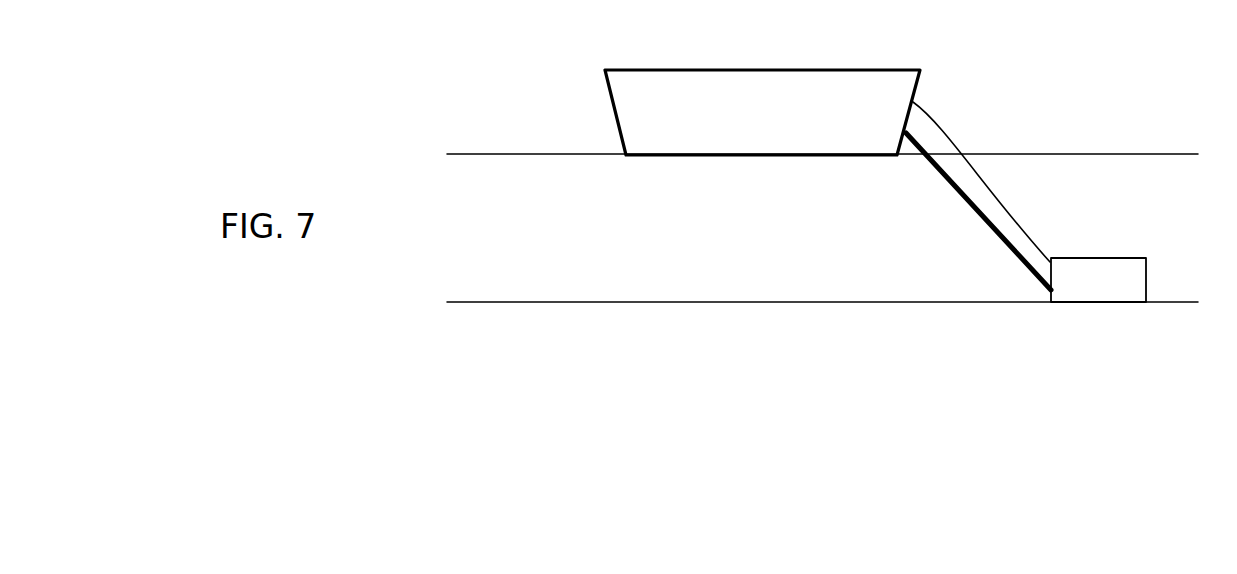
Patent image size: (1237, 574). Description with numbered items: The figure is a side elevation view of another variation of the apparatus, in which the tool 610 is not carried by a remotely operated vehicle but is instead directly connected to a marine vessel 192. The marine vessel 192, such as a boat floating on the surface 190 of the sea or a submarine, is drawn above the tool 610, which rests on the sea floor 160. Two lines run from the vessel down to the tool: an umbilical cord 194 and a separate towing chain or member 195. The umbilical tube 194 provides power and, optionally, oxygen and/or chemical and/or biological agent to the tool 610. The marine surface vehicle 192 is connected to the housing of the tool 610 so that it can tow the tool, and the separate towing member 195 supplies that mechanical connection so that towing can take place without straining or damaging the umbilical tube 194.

The surface of the sea 190 is at (554, 154).
The sea floor 160 is at (548, 298).
The marine vessel 192 is at (797, 68).
The umbilical cord 194 is at (988, 195).
The towing chain or member 195 is at (983, 220).
The tool 610 is at (1143, 253).